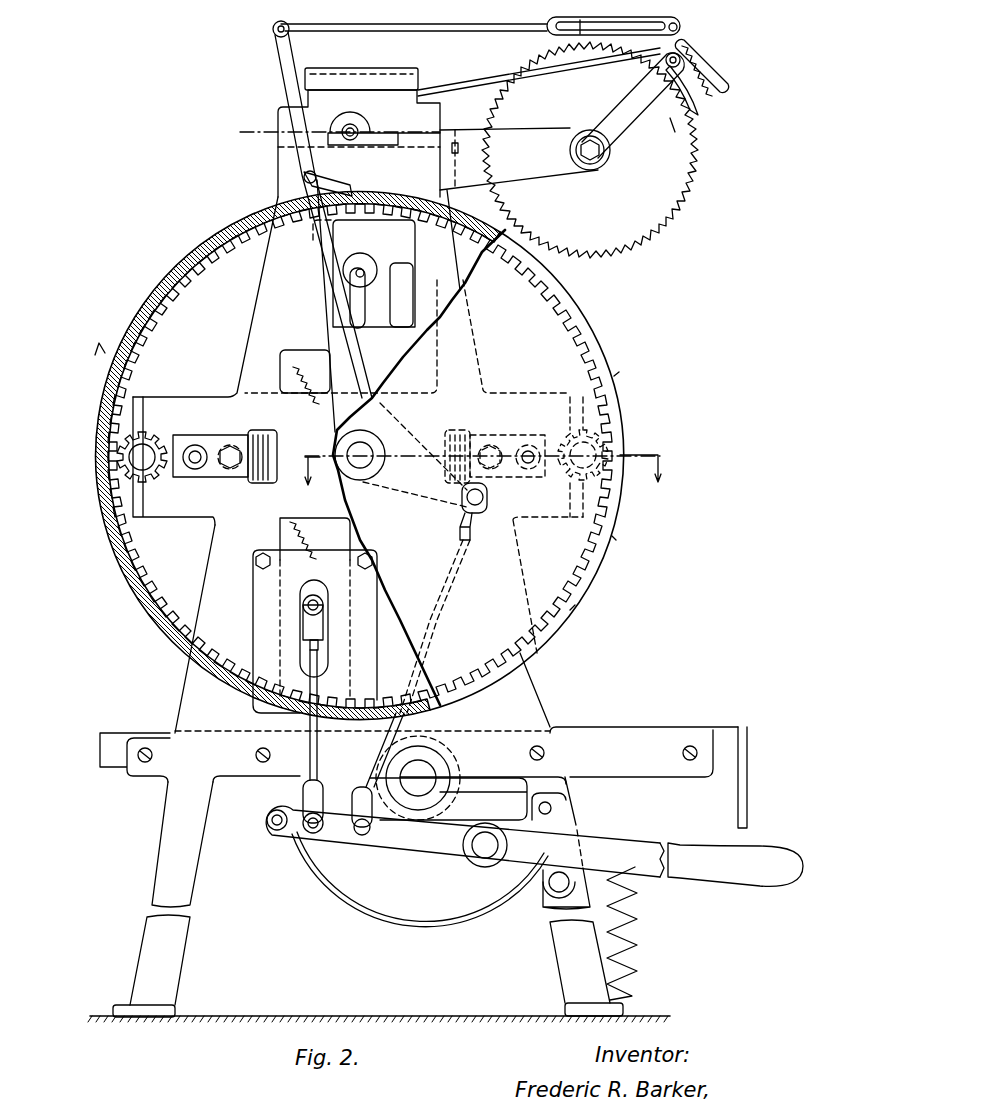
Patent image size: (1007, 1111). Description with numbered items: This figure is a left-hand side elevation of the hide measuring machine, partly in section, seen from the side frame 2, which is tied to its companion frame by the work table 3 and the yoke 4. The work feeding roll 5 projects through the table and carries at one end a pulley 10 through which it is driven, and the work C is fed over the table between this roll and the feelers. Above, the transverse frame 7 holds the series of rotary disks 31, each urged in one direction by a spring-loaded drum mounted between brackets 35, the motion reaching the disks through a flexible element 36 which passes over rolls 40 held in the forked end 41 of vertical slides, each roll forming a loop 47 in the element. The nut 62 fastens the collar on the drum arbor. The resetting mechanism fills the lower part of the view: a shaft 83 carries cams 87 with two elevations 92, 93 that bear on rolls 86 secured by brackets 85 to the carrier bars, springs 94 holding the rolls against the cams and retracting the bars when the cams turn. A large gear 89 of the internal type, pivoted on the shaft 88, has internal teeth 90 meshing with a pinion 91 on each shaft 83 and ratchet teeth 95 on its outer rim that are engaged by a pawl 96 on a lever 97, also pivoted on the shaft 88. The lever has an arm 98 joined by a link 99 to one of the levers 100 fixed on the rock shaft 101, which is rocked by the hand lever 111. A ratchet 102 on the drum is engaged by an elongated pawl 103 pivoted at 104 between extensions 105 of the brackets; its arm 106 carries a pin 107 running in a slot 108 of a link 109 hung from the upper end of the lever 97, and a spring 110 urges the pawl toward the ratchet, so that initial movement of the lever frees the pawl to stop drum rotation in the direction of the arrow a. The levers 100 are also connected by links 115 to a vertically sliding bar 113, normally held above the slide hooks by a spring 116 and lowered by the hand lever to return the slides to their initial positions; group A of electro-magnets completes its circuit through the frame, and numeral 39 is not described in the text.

The side frame 2 is at (160, 864).
The work table 3 is at (600, 735).
The yoke 4 is at (482, 465).
The work feeding roll 5 is at (460, 795).
The transverse frame 7 is at (405, 290).
The pulley 10 is at (365, 915).
The rotary disk 31 is at (300, 375).
The bracket 35 is at (555, 168).
The flexible element 36 is at (468, 82).
The pivot bearing 39 is at (352, 132).
The roll 40 is at (355, 260).
The forked end 41 is at (357, 296).
The loop 47 is at (374, 273).
The nut 62 is at (594, 158).
The shaft 83 is at (135, 460).
The bracket 85 is at (235, 447).
The roll 86 is at (200, 440).
The cam 87 is at (178, 472).
The shaft 88 is at (368, 447).
The gear 89 is at (605, 333).
The teeth 90 is at (180, 280).
The pinion 91 is at (120, 453).
The elevation 92 is at (192, 445).
The elevation 93 is at (130, 462).
The spring 94 is at (270, 445).
The ratchet teeth 95 is at (575, 610).
The pawl 96 is at (340, 190).
The lever 97 is at (300, 150).
The arm 98 is at (428, 496).
The link 99 is at (415, 680).
The lever 100 is at (440, 845).
The shaft 101 is at (485, 850).
The ratchet 102 is at (680, 205).
The pawl 103 is at (700, 112).
The pivot 104 is at (700, 60).
The extension 105 is at (625, 125).
The arm 106 is at (668, 55).
The pin 107 is at (680, 27).
The slot 108 is at (580, 34).
The link 109 is at (460, 27).
The spring 110 is at (728, 80).
The hand lever 111 is at (695, 872).
The bar 113 is at (298, 620).
The link 115 is at (312, 750).
The spring 116 is at (630, 945).
The group A is at (278, 117).
The work C is at (690, 735).
The arrow a is at (663, 128).